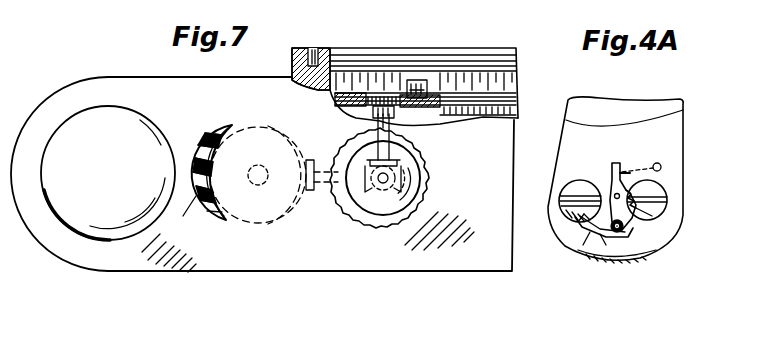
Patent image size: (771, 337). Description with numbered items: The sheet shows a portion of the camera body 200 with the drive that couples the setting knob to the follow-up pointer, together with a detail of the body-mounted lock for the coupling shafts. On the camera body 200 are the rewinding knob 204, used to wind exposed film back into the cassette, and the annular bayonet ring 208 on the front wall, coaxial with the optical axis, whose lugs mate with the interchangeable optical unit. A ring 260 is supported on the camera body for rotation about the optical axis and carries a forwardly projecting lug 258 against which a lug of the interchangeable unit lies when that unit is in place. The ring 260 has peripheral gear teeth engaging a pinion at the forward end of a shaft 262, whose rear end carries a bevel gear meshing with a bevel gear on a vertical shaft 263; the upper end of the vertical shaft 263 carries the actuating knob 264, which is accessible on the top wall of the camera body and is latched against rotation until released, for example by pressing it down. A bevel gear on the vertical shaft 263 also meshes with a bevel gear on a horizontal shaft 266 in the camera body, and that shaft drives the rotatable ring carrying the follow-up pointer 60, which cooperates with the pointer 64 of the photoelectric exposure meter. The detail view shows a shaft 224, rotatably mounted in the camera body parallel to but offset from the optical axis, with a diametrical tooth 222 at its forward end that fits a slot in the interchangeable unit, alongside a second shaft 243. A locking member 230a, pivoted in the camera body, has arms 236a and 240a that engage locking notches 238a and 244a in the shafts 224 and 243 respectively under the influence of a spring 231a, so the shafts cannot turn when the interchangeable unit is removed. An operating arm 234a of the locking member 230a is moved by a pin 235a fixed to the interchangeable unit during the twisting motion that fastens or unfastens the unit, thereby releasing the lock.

In FIG. 7, the camera body 200 is at (132, 90).
In FIG. 7, the rewinding knob 204 is at (112, 220).
In FIG. 7, the follow-up pointer 60 is at (222, 176).
In FIG. 7, the exposure meter pointer 64 is at (182, 214).
In FIG. 7, the annular bayonet ring 208 is at (338, 62).
In FIG. 7, the forwardly projecting lug 258 is at (419, 92).
In FIG. 7, the ring 260 is at (421, 104).
In FIG. 7, the shaft 262 is at (376, 127).
In FIG. 7, the vertical shaft 263 is at (375, 193).
In FIG. 7, the actuating knob 264 is at (418, 187).
In FIG. 7, the horizontal shaft 266 is at (325, 182).
In FIG. 4A, the operating arm 234a is at (615, 163).
In FIG. 4A, the pin 235a is at (657, 163).
In FIG. 4A, the locking notch 238a is at (662, 178).
In FIG. 4A, the shaft 243 is at (568, 183).
In FIG. 4A, the diametrical tooth 222 is at (666, 200).
In FIG. 4A, the shaft 224 is at (656, 215).
In FIG. 4A, the locking notch 244a is at (578, 222).
In FIG. 4A, the arm 240a is at (583, 245).
In FIG. 4A, the locking member 230a is at (591, 261).
In FIG. 4A, the spring 231a is at (606, 246).
In FIG. 4A, the arm 236a is at (623, 206).